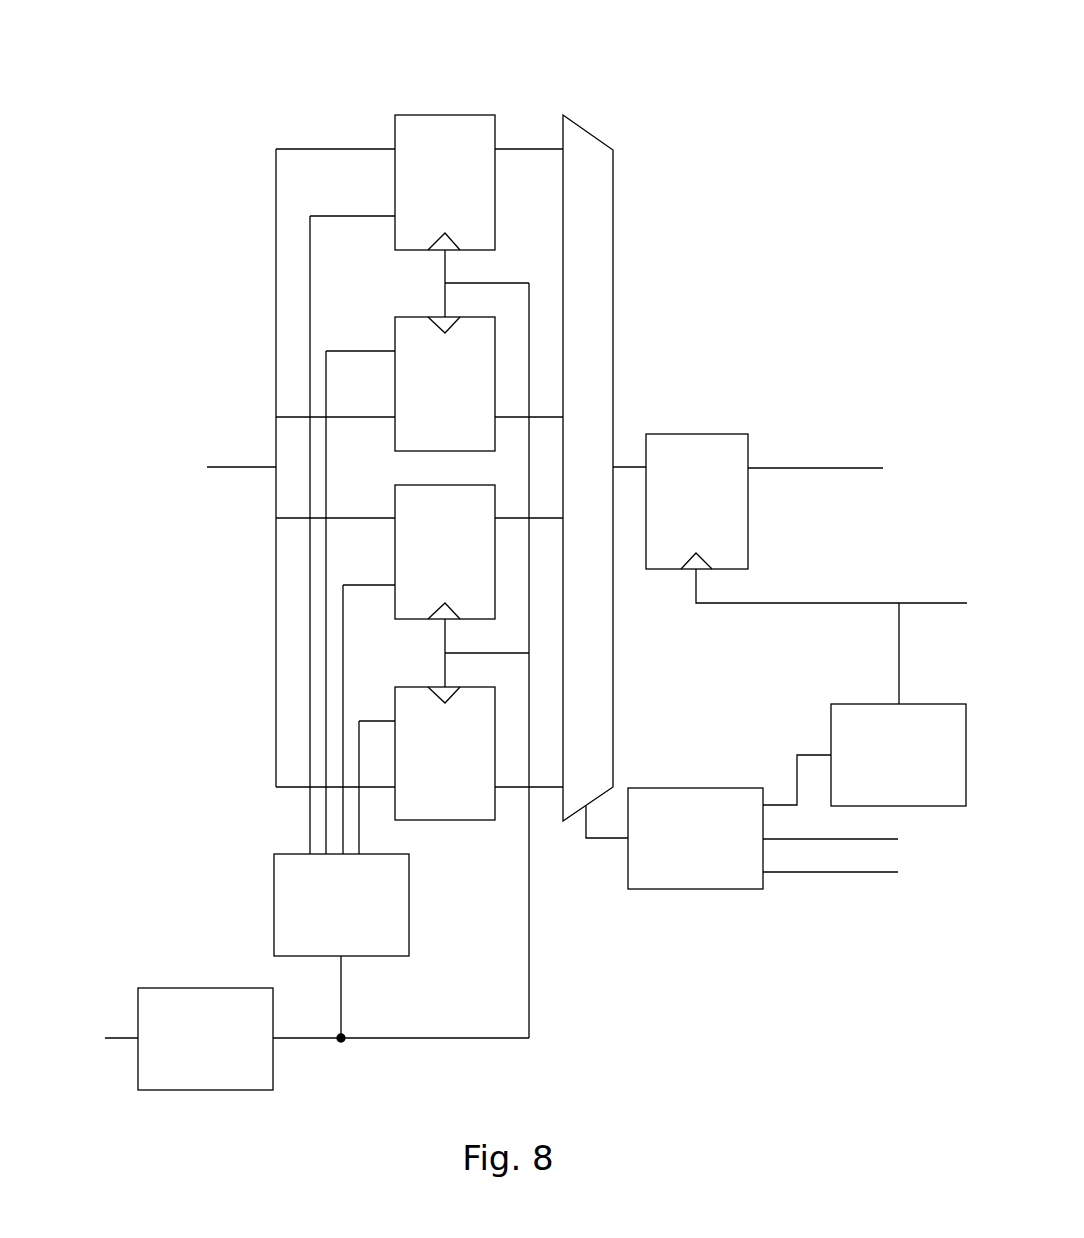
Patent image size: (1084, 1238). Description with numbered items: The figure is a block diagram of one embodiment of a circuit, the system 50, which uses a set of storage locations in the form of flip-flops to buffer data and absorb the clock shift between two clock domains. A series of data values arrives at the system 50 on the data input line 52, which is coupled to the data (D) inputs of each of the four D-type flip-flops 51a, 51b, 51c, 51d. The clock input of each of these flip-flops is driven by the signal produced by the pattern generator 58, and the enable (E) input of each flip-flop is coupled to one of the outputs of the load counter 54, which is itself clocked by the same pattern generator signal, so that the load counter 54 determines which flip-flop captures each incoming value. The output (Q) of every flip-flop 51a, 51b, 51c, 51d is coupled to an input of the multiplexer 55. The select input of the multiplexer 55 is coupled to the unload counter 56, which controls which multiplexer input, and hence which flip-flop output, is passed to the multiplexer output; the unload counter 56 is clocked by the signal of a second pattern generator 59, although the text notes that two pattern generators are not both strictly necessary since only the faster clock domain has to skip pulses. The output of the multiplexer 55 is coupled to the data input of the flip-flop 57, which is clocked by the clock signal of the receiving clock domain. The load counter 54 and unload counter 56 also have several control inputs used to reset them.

The system 50 is at (651, 177).
The D-type flip-flop 51a is at (444, 115).
The D-type flip-flop 51b is at (419, 317).
The D-type flip-flop 51c is at (407, 621).
The D-type flip-flop 51d is at (443, 822).
The data input line 52 is at (241, 467).
The load counter 54 is at (329, 942).
The multiplexer 55 is at (575, 478).
The unload counter 56 is at (683, 876).
The flip-flop 57 is at (698, 434).
The pattern generator 58 is at (193, 1076).
The pattern generator 59 is at (886, 793).